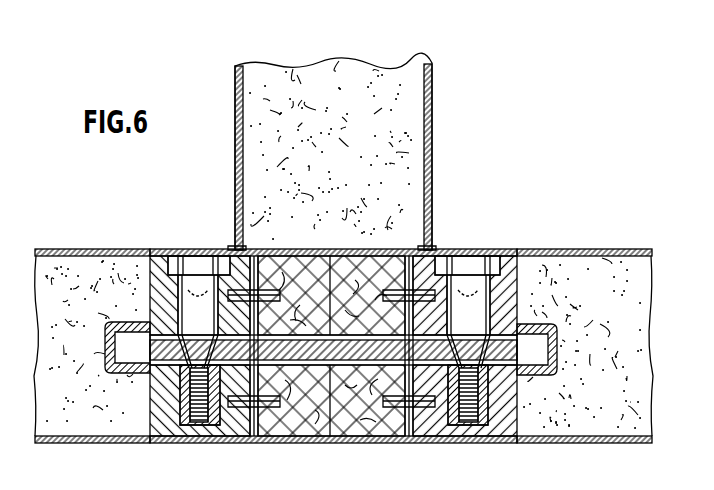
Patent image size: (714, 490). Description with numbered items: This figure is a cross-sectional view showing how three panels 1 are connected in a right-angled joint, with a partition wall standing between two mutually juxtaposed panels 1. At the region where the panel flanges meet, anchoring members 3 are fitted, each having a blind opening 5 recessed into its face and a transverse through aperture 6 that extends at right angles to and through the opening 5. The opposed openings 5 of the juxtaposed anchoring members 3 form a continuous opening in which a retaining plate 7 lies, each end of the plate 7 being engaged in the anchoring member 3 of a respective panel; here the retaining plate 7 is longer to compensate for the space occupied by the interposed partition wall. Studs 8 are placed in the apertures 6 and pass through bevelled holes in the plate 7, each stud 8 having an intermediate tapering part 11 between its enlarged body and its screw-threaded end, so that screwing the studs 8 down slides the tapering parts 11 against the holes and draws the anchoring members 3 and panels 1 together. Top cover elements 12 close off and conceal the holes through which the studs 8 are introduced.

The panel 1 is at (57, 248).
The anchoring member 3 is at (160, 250).
The blind opening 5 is at (534, 355).
The transverse through aperture 6 is at (150, 257).
The retaining plate 7 is at (317, 354).
The stud 8 is at (185, 438).
The intermediate tapering part 11 is at (152, 349).
The top cover element 12 is at (497, 256).